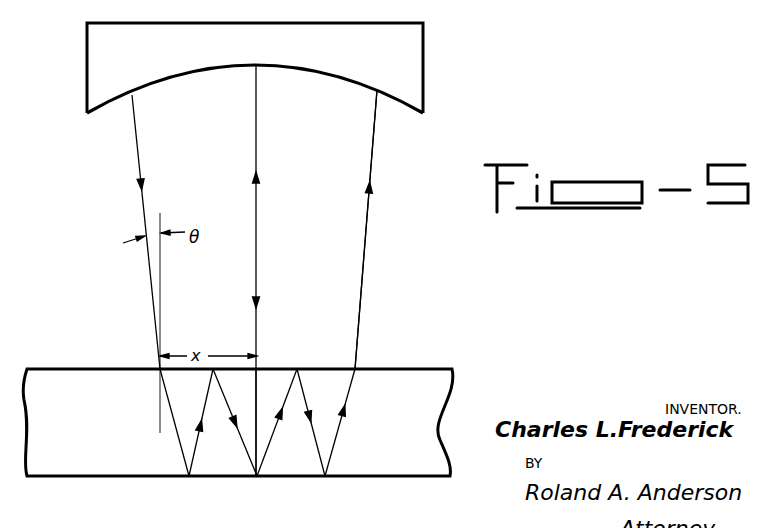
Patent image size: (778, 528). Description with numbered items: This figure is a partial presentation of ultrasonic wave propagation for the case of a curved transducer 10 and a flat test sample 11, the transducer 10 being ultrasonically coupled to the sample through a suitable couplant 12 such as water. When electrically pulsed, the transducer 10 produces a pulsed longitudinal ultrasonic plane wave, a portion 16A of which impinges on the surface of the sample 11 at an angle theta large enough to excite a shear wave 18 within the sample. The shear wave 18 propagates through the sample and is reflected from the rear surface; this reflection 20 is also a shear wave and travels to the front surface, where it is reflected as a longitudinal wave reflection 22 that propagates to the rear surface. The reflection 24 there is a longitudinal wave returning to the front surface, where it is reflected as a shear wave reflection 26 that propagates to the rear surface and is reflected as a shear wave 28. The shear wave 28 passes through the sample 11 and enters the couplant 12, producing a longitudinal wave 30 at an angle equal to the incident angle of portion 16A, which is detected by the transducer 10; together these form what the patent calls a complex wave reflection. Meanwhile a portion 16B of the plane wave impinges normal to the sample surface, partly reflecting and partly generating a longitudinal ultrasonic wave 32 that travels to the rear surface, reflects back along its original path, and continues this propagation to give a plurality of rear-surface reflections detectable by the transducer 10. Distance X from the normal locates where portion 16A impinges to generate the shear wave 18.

The transducer 10 is at (265, 55).
The test sample 11 is at (86, 433).
The couplant 12 is at (414, 262).
The portion of longitudinal wave 16A is at (140, 158).
The portion of pulsed ultrasonic plane wave 16B is at (257, 140).
The shear wave 18 is at (182, 454).
The reflection 20 is at (205, 405).
The reflection 22 is at (236, 452).
The reflection 24 is at (269, 442).
The reflection 26 is at (307, 404).
The shear wave 28 is at (332, 450).
The longitudinal wave 30 is at (364, 242).
The longitudinal ultrasonic wave 32 is at (258, 404).